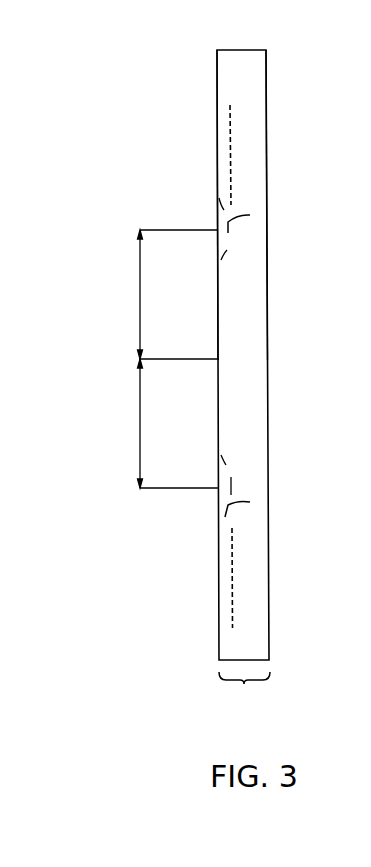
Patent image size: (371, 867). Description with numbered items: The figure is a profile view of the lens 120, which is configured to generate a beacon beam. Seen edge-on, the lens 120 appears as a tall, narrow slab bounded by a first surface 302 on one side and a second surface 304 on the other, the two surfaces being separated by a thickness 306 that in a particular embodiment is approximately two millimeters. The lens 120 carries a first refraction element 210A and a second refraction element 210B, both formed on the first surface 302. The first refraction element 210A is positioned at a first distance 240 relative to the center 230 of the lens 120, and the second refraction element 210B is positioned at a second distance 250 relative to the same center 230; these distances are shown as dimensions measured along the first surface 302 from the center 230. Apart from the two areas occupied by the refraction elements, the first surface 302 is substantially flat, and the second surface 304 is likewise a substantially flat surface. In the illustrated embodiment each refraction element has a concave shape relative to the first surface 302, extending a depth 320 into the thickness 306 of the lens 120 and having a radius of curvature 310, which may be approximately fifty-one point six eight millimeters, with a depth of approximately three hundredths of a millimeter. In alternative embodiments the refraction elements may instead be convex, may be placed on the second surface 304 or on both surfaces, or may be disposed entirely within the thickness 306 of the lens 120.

The lens 120 is at (219, 633).
The first surface 302 is at (217, 74).
The second surface 304 is at (267, 83).
The thickness 306 is at (244, 690).
The radius of curvature 310 is at (250, 215).
The depth 320 is at (230, 145).
The first refraction element 210A is at (227, 243).
The second refraction element 210B is at (228, 472).
The center 230 is at (221, 358).
The first distance 240 is at (140, 293).
The second distance 250 is at (140, 423).